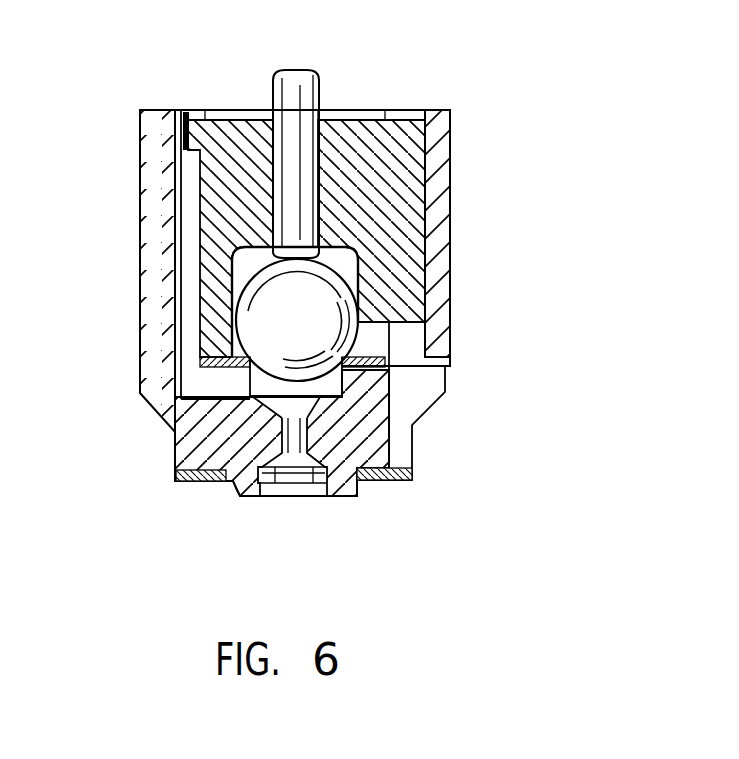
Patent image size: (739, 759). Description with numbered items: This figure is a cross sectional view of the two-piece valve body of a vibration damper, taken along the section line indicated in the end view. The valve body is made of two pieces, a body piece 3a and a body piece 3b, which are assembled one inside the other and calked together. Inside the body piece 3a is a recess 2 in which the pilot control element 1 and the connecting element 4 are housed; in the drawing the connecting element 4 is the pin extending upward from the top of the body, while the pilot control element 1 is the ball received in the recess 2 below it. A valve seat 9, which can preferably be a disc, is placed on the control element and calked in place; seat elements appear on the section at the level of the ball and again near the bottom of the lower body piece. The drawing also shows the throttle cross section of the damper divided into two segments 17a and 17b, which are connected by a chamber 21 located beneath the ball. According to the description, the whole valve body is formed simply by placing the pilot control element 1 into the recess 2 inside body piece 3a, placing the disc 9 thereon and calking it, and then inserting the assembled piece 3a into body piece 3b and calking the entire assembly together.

The pilot control element 1 is at (340, 297).
The recess 2 is at (417, 262).
The valve body piece 3a is at (413, 146).
The valve body piece 3b is at (378, 413).
The connecting element 4 is at (319, 83).
The valve seat 9 is at (427, 357).
The throttle cross section segment 17a is at (300, 440).
The throttle cross section segment 17b is at (193, 257).
The chamber 21 is at (227, 409).